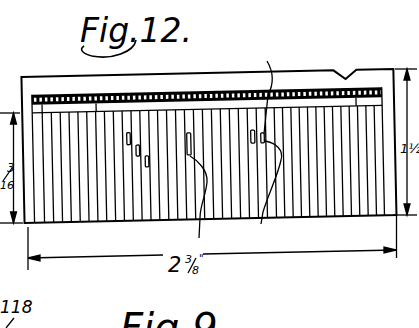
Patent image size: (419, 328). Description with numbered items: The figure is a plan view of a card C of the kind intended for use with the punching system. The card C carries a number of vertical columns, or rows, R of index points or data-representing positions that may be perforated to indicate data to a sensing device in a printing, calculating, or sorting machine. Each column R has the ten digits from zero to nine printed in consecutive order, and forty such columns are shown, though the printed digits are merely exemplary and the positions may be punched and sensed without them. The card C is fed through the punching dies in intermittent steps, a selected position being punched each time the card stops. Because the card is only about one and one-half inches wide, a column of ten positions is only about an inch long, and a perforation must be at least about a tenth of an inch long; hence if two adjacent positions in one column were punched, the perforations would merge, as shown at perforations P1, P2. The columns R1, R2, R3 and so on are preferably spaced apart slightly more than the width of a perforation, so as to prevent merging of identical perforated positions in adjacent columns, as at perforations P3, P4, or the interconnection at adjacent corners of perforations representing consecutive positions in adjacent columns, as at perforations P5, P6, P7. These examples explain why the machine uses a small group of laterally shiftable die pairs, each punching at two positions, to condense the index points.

The card C is at (302, 78).
The perforation P1 is at (189, 134).
The perforation P2 is at (206, 204).
The perforation P3 is at (253, 131).
The perforation P4 is at (272, 152).
The perforation P5 is at (128, 135).
The perforation P6 is at (137, 147).
The perforation P7 is at (146, 157).
The vertical column R is at (37, 224).
The column R1 is at (94, 223).
The column R2 is at (138, 221).
The column R3 is at (174, 220).